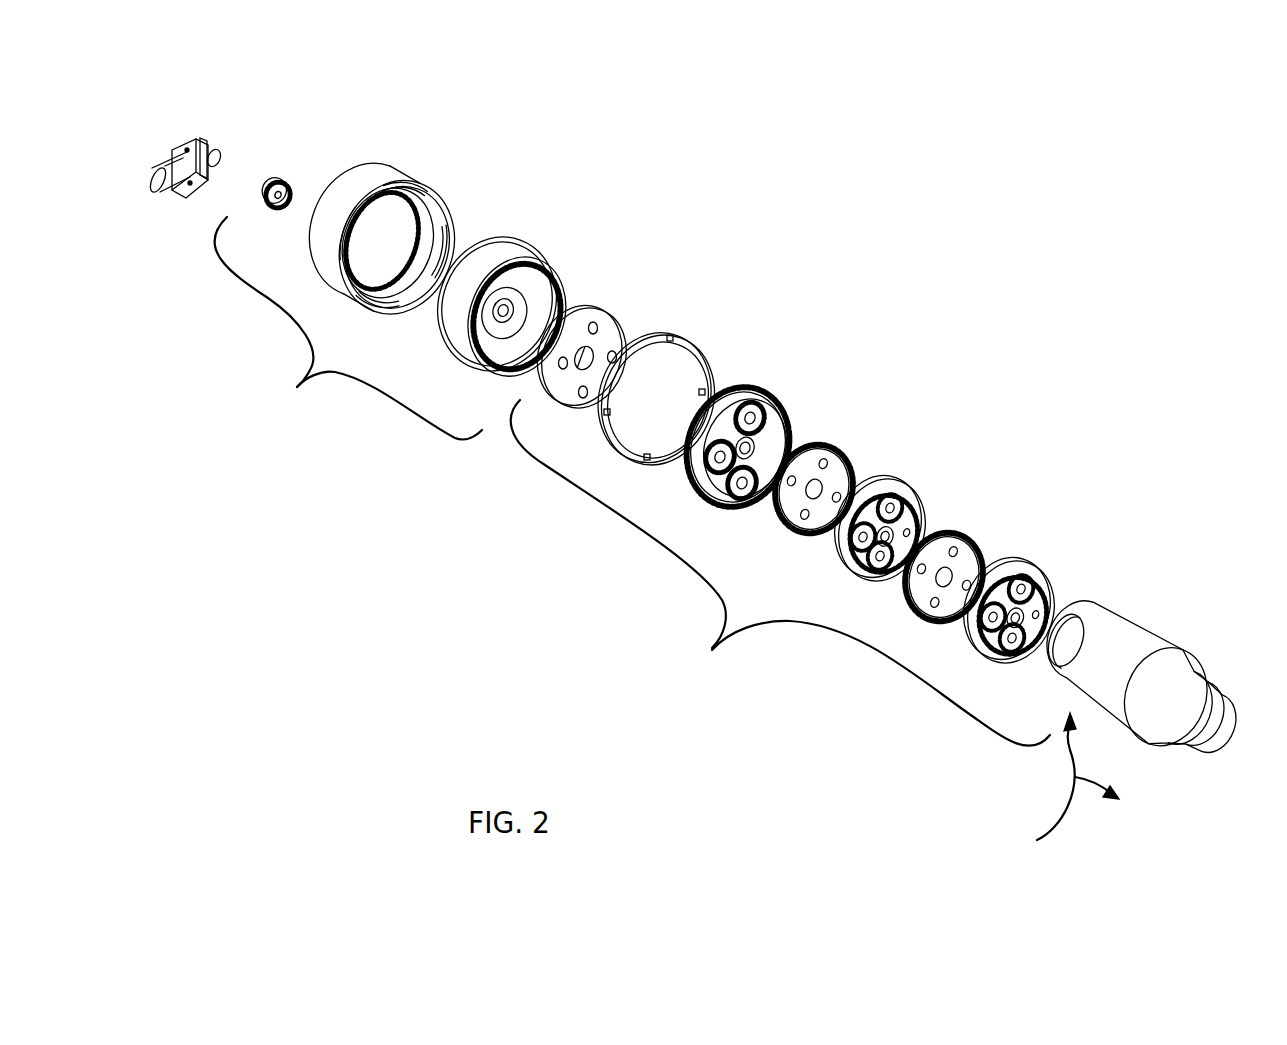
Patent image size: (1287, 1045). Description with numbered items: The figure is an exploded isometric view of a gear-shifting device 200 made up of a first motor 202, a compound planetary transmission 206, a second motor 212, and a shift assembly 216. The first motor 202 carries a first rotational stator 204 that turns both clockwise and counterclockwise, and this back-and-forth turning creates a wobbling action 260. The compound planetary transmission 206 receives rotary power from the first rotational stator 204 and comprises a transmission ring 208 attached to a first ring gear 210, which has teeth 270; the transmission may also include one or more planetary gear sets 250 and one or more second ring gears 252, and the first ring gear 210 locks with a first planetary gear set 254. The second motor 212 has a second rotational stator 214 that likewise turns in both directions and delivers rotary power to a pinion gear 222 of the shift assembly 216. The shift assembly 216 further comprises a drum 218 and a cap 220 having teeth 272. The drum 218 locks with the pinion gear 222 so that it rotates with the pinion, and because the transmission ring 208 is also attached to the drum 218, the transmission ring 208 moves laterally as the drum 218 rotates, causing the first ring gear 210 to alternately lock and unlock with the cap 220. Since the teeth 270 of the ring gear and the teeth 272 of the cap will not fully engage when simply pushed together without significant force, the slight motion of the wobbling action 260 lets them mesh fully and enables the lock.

The gear-shifting device 200 is at (1118, 119).
The first motor 202 is at (1112, 713).
The first rotational stator 204 is at (1060, 610).
The compound planetary transmission 206 is at (780, 573).
The transmission ring 208 is at (688, 345).
The first ring gear 210 is at (774, 433).
The second motor 212 is at (167, 193).
The second rotational stator 214 is at (220, 150).
The shift assembly 216 is at (348, 328).
The drum 218 is at (402, 174).
The cap 220 is at (527, 250).
The pinion gear 222 is at (288, 183).
The planetary gear sets 250 is at (900, 540).
The second ring gears 252 is at (929, 581).
The first planetary gear set 254 is at (742, 480).
The wobbling action 260 is at (1053, 785).
The teeth 270 is at (758, 485).
The teeth 272 is at (545, 326).